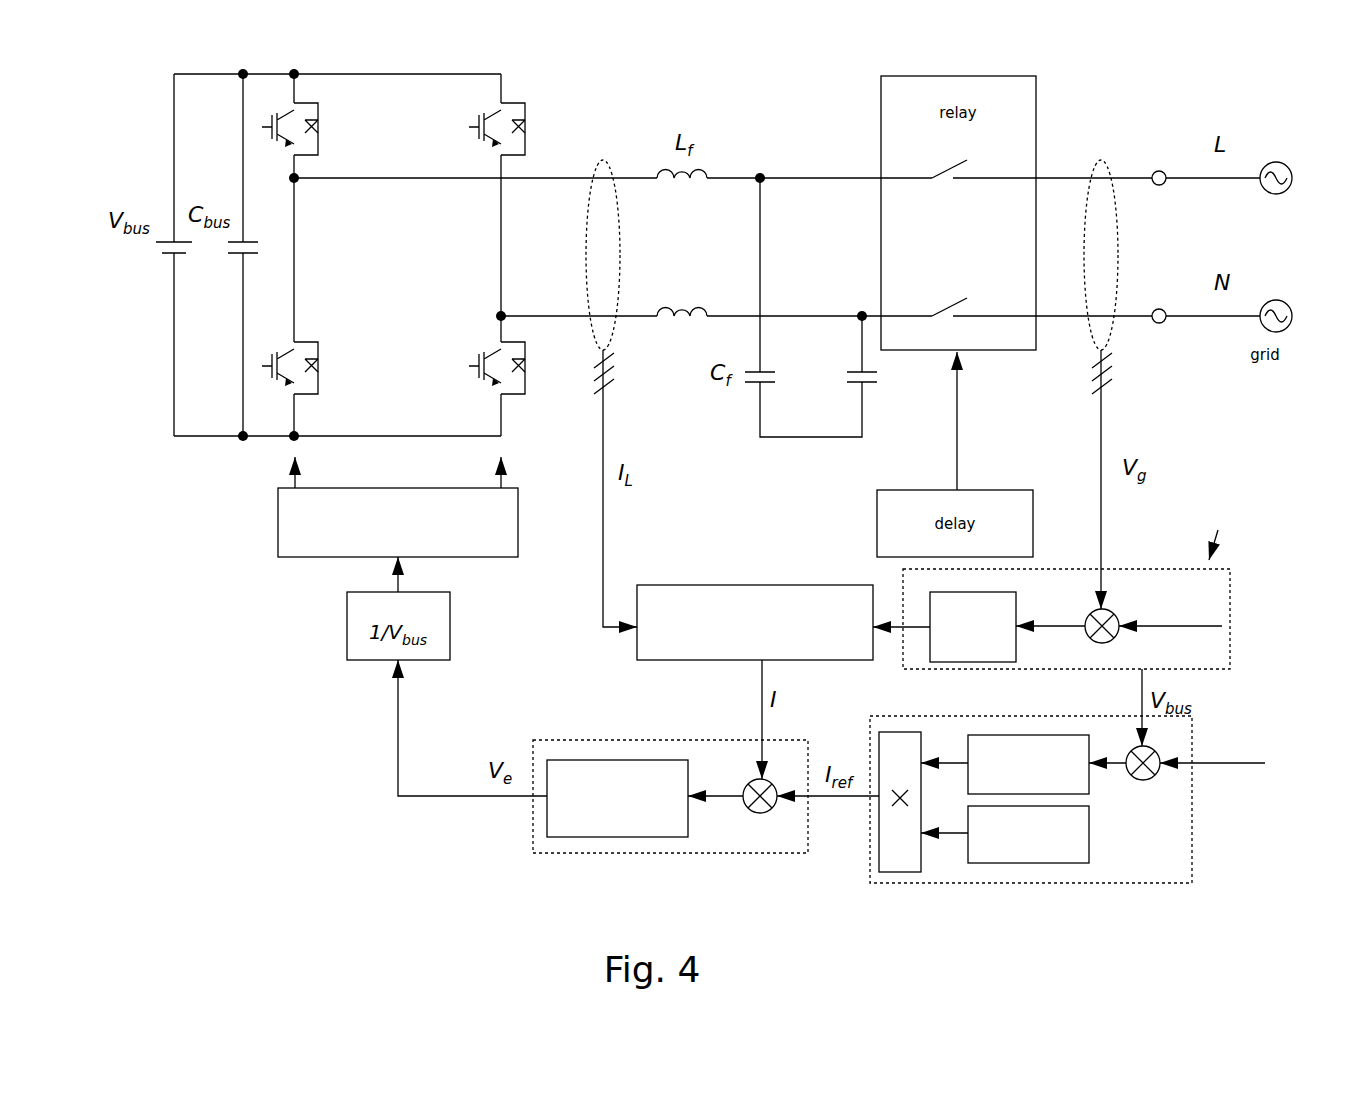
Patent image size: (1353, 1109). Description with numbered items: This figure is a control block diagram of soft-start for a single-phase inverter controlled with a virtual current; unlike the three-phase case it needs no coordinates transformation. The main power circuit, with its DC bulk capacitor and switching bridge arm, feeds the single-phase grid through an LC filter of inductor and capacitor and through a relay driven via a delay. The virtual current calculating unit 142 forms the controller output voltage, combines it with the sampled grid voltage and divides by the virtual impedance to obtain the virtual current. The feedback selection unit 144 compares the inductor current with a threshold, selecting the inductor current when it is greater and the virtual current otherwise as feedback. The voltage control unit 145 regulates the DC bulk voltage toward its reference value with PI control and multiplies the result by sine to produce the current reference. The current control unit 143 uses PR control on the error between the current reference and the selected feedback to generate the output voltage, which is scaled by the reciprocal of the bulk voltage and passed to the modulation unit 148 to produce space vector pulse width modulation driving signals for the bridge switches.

The virtual current calculating unit 142 is at (1233, 620).
The current control unit 143 is at (597, 853).
The feedback selection unit 144 is at (765, 585).
The voltage control unit 145 is at (1025, 883).
The modulation unit 148 is at (315, 557).